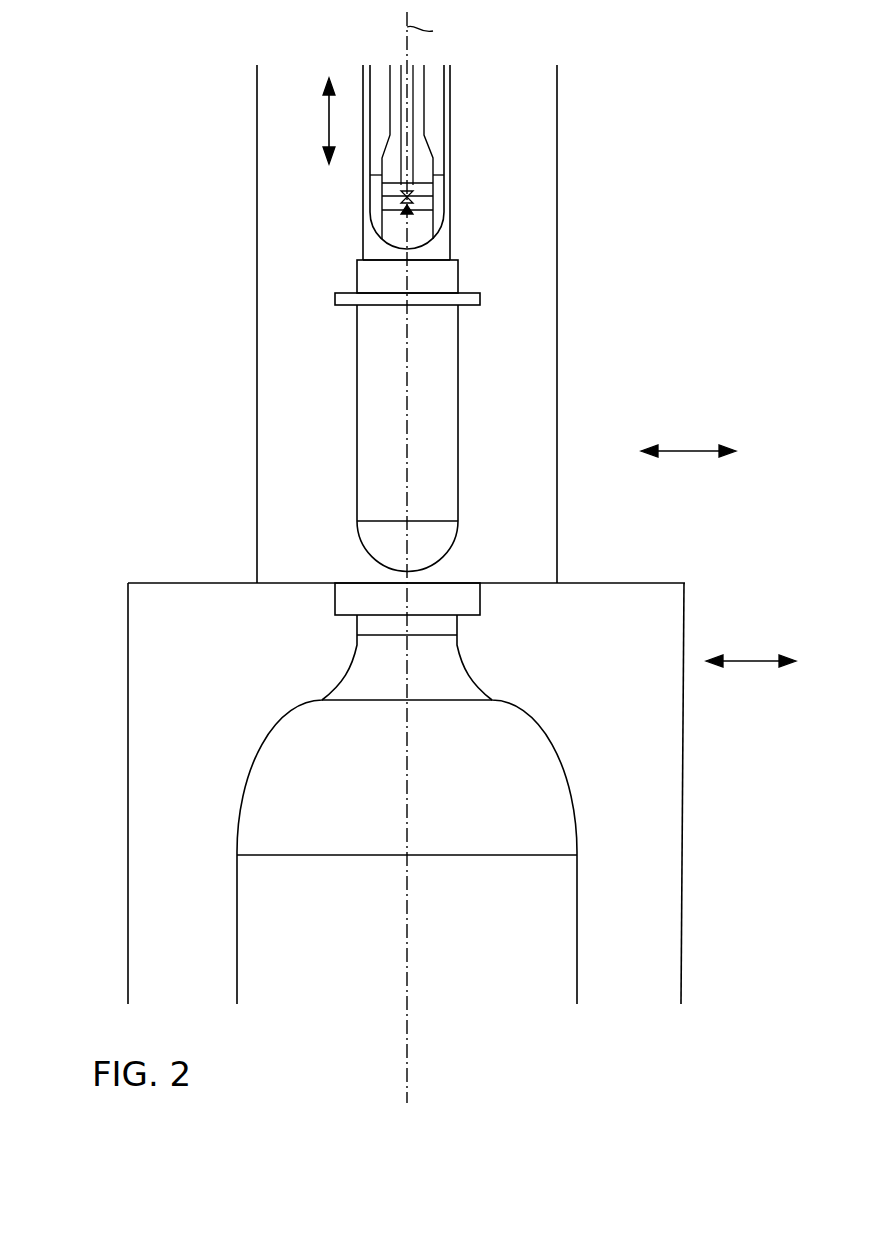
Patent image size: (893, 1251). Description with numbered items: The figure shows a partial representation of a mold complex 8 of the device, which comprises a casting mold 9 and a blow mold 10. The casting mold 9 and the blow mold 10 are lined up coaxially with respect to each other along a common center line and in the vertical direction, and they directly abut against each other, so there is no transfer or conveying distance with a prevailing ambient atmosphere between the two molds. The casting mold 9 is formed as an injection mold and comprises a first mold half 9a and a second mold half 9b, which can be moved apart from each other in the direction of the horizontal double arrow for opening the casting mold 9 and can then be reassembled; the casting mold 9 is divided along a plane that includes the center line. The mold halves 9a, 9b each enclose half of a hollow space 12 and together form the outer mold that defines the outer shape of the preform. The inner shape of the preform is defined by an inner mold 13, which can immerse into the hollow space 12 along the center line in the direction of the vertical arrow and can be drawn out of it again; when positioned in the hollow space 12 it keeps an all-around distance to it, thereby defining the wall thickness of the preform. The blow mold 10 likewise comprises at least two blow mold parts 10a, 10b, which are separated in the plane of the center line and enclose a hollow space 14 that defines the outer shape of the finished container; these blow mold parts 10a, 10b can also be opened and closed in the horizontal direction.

The mold complex 8 is at (108, 235).
The casting mold 9 is at (404, 324).
The first mold half 9a is at (278, 386).
The second mold half 9b is at (545, 428).
The blow mold 10 is at (413, 793).
The first blow mold part 10a is at (153, 656).
The second blow mold part 10b is at (665, 900).
The hollow space 12 is at (395, 369).
The inner mold 13 is at (447, 192).
The hollow space 14 is at (497, 806).